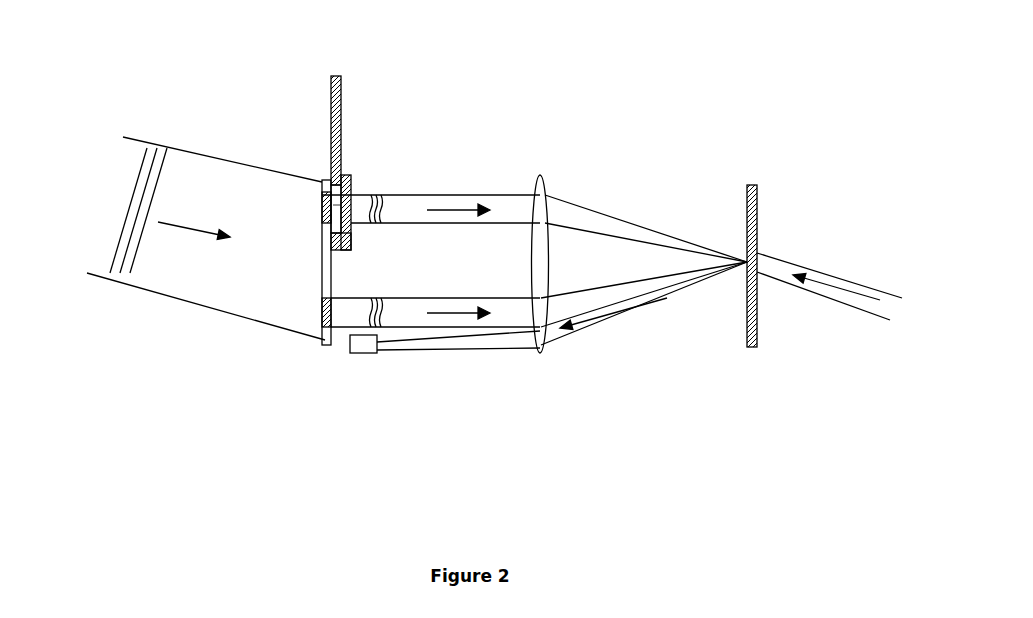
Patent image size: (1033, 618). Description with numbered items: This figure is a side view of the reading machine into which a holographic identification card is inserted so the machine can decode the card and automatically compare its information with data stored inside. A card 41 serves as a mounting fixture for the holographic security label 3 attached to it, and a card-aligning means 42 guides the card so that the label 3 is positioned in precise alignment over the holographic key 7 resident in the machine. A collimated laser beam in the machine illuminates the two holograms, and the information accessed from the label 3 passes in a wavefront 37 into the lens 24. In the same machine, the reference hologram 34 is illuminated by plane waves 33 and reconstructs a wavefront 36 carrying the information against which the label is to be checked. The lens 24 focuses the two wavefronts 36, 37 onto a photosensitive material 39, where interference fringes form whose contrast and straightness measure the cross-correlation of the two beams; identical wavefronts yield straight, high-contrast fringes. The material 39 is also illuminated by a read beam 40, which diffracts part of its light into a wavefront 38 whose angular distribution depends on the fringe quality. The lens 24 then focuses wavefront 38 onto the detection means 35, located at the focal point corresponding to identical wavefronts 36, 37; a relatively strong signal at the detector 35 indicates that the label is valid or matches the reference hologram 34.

The holographic security label 3 is at (337, 205).
The holographic key 7 is at (322, 207).
The lens 24 is at (545, 193).
The plane waves 33 is at (157, 193).
The reference hologram 34 is at (327, 317).
The detection means 35 is at (372, 357).
The wavefront 36 is at (442, 320).
The wavefront 37 is at (457, 205).
The wavefront 38 is at (563, 338).
The photosensitive material 39 is at (757, 215).
The read beam 40 is at (850, 294).
The card 41 is at (343, 87).
The card-aligning means 42 is at (350, 170).